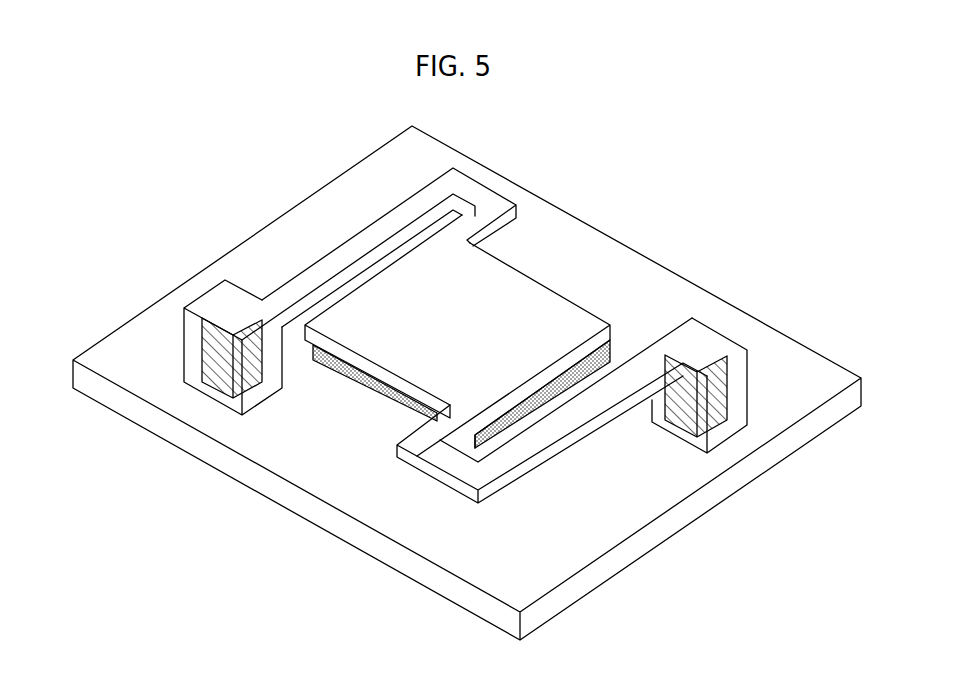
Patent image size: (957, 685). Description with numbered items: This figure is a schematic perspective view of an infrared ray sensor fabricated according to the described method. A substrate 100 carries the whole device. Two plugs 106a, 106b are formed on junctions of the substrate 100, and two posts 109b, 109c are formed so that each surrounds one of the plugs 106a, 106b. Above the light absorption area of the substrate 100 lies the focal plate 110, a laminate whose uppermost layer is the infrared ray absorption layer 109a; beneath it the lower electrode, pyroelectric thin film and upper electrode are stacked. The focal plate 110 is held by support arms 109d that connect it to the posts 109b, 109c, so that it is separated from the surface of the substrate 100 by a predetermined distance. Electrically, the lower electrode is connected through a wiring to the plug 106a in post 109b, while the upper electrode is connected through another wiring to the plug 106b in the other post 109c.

The substrate 100 is at (440, 588).
The plug 106a is at (738, 392).
The plug 106b is at (212, 352).
The infrared ray absorption layer 109a is at (547, 288).
The post 109b is at (728, 385).
The post 109c is at (212, 293).
The support arm 109d is at (348, 242).
The focal plate 110 is at (387, 395).